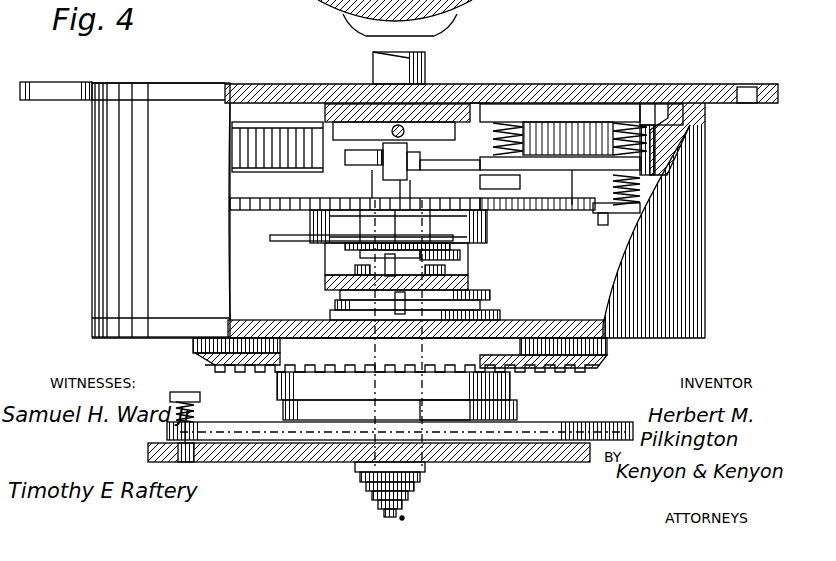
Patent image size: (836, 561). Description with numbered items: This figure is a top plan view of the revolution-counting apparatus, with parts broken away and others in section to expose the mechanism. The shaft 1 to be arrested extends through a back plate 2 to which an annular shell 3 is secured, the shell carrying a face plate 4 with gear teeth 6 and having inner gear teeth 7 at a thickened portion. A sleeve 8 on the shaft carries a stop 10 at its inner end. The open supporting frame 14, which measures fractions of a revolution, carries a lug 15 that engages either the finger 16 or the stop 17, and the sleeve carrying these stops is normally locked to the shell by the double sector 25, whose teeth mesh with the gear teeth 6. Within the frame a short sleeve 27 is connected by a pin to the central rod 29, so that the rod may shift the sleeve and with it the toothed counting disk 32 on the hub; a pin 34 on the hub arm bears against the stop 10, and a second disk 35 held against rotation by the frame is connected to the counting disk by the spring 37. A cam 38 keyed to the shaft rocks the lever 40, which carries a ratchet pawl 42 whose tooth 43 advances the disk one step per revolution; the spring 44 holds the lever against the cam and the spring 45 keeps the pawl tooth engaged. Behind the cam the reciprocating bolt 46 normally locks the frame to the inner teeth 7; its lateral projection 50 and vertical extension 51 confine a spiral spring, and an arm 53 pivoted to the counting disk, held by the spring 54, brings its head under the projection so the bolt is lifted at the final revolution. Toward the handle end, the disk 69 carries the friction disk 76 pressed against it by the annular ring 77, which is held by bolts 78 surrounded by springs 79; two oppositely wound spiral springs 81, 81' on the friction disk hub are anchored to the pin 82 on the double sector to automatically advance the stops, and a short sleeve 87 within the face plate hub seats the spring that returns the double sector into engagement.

The shaft 1 is at (425, 72).
The back plate 2 is at (548, 86).
The annular shell 3 is at (161, 210).
The face plate 4 is at (542, 322).
The gear teeth 6 is at (596, 370).
The inner gear teeth 7 is at (700, 112).
The sleeve 8 is at (420, 490).
The stop 10 is at (345, 266).
The supporting frame 14 is at (343, 104).
The lug 15 is at (430, 306).
The finger 16 is at (350, 294).
The stop 17 is at (350, 308).
The double sector 25 is at (500, 374).
The short sleeve 27 is at (360, 198).
The rod 29 is at (406, 518).
The disk 32 is at (262, 212).
The pin 34 is at (480, 262).
The disk 35 is at (272, 240).
The spring 37 is at (488, 224).
The cam 38 is at (370, 170).
The lever 40 is at (598, 170).
The ratchet pawl 42 is at (648, 190).
The tooth 43 is at (652, 208).
The spring 44 is at (530, 160).
The spring 45 is at (666, 165).
The bolt 46 is at (345, 130).
The lateral projection 50 is at (401, 161).
The vertical extension 51 is at (478, 96).
The arm 53 is at (560, 200).
The spring 54 is at (478, 186).
The disk 69 is at (222, 450).
The friction disk 76 is at (275, 450).
The annular ring 77 is at (633, 428).
The bolt 78 is at (186, 395).
The spring 79 is at (182, 430).
The spiral spring 81 is at (366, 383).
The spiral spring 81' is at (369, 405).
The pin 82 is at (518, 410).
The short sleeve 87 is at (612, 352).